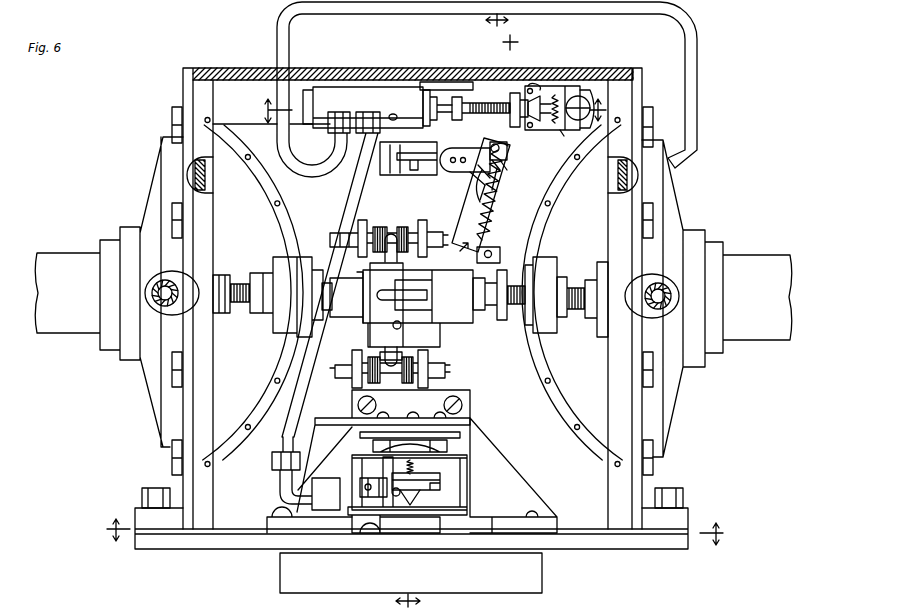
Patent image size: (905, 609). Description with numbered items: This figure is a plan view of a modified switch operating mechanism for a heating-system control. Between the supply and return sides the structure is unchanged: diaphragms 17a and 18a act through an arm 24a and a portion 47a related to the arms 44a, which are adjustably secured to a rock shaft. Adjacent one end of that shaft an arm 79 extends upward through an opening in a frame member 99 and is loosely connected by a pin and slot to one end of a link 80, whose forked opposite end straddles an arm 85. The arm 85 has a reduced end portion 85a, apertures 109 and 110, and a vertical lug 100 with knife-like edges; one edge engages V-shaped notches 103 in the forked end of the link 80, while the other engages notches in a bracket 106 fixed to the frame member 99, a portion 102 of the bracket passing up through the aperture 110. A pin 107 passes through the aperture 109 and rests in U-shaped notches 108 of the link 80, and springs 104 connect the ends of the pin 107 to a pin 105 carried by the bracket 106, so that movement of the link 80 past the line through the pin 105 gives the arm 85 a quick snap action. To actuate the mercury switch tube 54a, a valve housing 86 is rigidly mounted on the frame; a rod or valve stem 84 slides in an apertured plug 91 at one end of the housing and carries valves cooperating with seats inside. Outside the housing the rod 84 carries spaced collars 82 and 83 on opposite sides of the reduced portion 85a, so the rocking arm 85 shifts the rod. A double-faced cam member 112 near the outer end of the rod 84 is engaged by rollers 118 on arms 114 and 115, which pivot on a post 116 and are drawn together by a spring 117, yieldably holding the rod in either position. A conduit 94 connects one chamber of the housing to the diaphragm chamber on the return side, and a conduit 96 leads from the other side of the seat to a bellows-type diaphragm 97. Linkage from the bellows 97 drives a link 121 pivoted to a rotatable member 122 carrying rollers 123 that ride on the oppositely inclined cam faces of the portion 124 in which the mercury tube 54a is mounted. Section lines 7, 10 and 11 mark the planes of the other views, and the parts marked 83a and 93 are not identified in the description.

The section line 7- 7 is at (415, 563).
The section line 10- 10 is at (427, 117).
The section line 11- 11 is at (487, 140).
The diaphragm 17a is at (640, 172).
The diaphragm 18a is at (212, 178).
The arm 24a is at (446, 371).
The arms 44a is at (418, 225).
The portion 47a is at (388, 222).
The mercury switch tube 54a is at (484, 528).
The arm 79 is at (397, 170).
The link 80 is at (452, 147).
The collar 82 is at (463, 102).
The collar 83 is at (511, 96).
The gear 83a is at (352, 378).
The rod or valve stem 84 is at (481, 105).
The arm 85 is at (498, 192).
The reduced end portion 85a is at (497, 142).
The valve housing 86 is at (333, 97).
The apertured plug 91 is at (424, 90).
The cylinder port 93 is at (393, 113).
The conduit 94 is at (334, 149).
The conduit 96 is at (298, 418).
The bellows-type diaphragm 97 is at (467, 460).
The frame member 99 is at (432, 82).
The vertical lug 100 is at (512, 160).
The portion of bracket 102 is at (500, 178).
The V-shaped notches 103 is at (475, 166).
The springs 104 is at (497, 236).
The pin 105 is at (541, 295).
The bracket 106 is at (492, 254).
The pin 107 is at (503, 157).
The U-shaped notches 108 is at (509, 168).
The aperture 109 is at (503, 146).
The aperture 110 is at (470, 185).
The double-faced cam member 112 is at (556, 95).
The arm 114 is at (551, 88).
The arm 115 is at (572, 140).
The post 116 is at (593, 92).
The spring 117 is at (578, 96).
The rollers 118 is at (541, 92).
The link 121 is at (441, 482).
The rotatable member 122 is at (458, 462).
The rollers 123 is at (406, 503).
The cam portion 124 is at (413, 504).